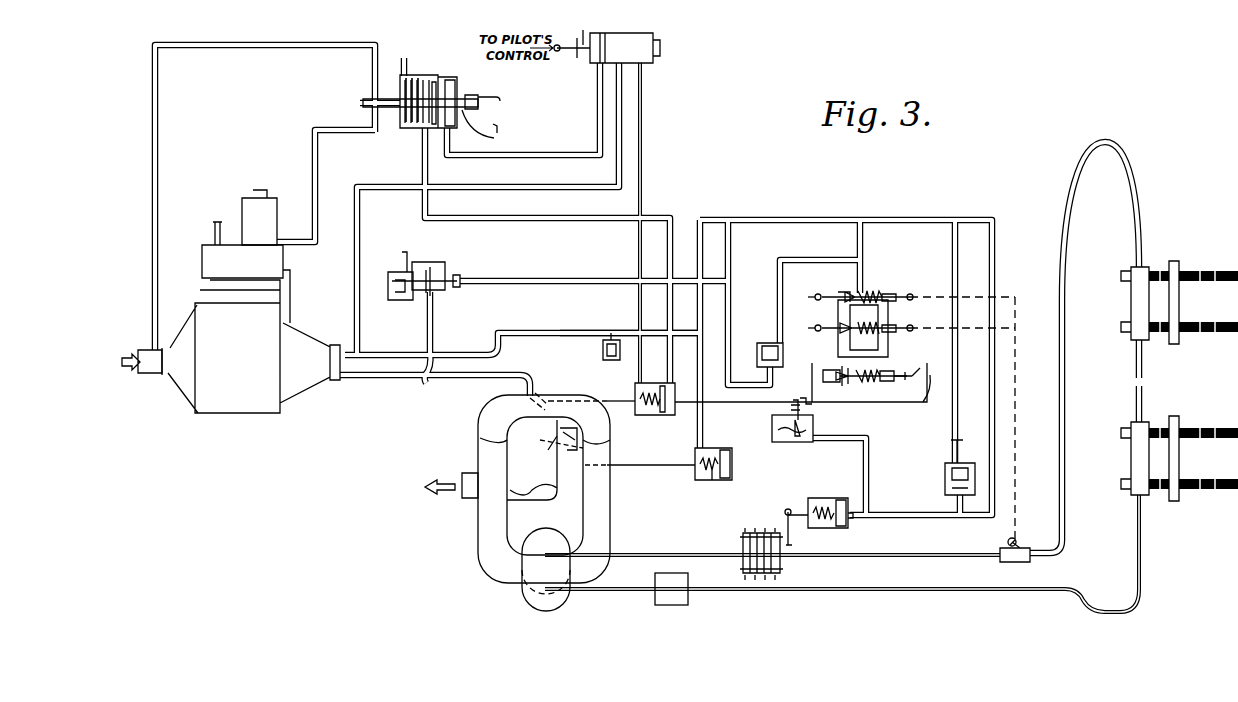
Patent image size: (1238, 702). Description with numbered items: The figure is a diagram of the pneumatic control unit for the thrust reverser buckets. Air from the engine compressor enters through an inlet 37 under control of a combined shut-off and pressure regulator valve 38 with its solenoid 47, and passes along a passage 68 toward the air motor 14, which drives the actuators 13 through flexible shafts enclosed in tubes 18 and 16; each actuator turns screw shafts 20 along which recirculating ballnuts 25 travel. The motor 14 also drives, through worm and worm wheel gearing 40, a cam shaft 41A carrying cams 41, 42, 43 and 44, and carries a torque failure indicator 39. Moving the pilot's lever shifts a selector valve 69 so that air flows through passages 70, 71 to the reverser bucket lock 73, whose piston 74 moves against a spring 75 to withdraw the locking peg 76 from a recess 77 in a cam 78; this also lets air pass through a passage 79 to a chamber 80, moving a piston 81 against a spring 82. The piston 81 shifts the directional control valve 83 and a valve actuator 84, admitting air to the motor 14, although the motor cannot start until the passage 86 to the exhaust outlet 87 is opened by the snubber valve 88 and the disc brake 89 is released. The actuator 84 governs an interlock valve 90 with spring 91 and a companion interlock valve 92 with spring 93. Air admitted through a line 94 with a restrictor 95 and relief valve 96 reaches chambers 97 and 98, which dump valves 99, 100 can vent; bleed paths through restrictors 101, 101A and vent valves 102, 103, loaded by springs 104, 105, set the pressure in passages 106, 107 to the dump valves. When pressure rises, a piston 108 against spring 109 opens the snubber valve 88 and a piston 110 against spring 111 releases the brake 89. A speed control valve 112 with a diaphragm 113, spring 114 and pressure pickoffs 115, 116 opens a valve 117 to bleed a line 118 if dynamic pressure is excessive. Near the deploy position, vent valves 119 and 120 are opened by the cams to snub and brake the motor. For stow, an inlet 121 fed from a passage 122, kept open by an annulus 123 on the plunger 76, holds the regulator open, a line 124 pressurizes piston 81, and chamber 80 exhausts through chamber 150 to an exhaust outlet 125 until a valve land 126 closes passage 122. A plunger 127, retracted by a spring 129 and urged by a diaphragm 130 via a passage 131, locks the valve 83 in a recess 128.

The actuators 13 is at (1130, 298).
The air motor 14 is at (525, 600).
The tubes 16 is at (1141, 375).
The tubes 18 is at (943, 553).
The screw shafts 20 is at (1200, 270).
The recirculating ballnut 25 is at (1180, 300).
The inlet 37 is at (150, 372).
The combined shut-off and pressure regulator valve 38 is at (300, 345).
The torque failure indicator 39 is at (658, 606).
The worm and worm wheel gearing 40 is at (1020, 545).
The cam 41 is at (918, 291).
The cam shaft 41A is at (1018, 408).
The cam 42 is at (914, 327).
The cam 43 is at (813, 294).
The cam 44 is at (814, 328).
The solenoid 47 is at (243, 200).
The passage 68 is at (365, 376).
The selector valve 69 is at (650, 33).
The passage 70 is at (535, 186).
The passage 71 is at (546, 152).
The reverser bucket lock 73 is at (455, 82).
The piston 74 is at (438, 82).
The spring 75 is at (414, 77).
The locking peg 76 is at (474, 94).
The recess 77 is at (484, 97).
The cam 78 is at (497, 131).
The passage 79 is at (676, 216).
The chamber 80 is at (676, 408).
The piston 81 is at (675, 389).
The spring 82 is at (645, 416).
The directional control valve 83 is at (554, 398).
The valve actuator 84 is at (930, 404).
The passage 86 is at (477, 540).
The exhaust outlet 87 is at (462, 495).
The snubber valve 88 is at (542, 442).
The disc brake 89 is at (744, 550).
The interlock valve 90 is at (838, 370).
The spring 91 is at (852, 382).
The companion interlock valve 92 is at (900, 380).
The spring 93 is at (878, 383).
The line 94 is at (590, 331).
The restrictor 95 is at (545, 332).
The relief valve 96 is at (602, 351).
The chamber 97 is at (732, 470).
The chamber 98 is at (850, 522).
The dump valve 99 is at (760, 343).
The dump valve 100 is at (945, 470).
The restrictor 101 is at (858, 244).
The restrictor 101A is at (952, 248).
The vent valve 102 is at (842, 292).
The vent valve 103 is at (838, 322).
The spring 104 is at (883, 290).
The spring 105 is at (884, 322).
The passage 106 is at (796, 258).
The passage 107 is at (955, 440).
The piston 108 is at (714, 482).
The spring 109 is at (696, 470).
The piston 110 is at (826, 498).
The spring 111 is at (804, 504).
The speed control valve 112 is at (395, 298).
The diaphragm 113 is at (435, 268).
The spring 114 is at (426, 262).
The pressure pickoff 115 is at (423, 331).
The pressure pickoff 116 is at (426, 374).
The valve 117 is at (460, 286).
The line 118 is at (526, 278).
The vent valve 119 is at (890, 292).
The vent valve 120 is at (886, 326).
The inlet 121 is at (312, 142).
The passage 122 is at (276, 42).
The annulus 123 is at (395, 108).
The line 124 is at (637, 245).
The exhaust outlet 125 is at (400, 62).
The valve land 126 is at (364, 98).
The plunger 127 is at (792, 402).
The recess 128 is at (810, 405).
The spring 129 is at (772, 430).
The diaphragm 130 is at (786, 437).
The passage 131 is at (870, 479).
The chamber 150 is at (418, 128).